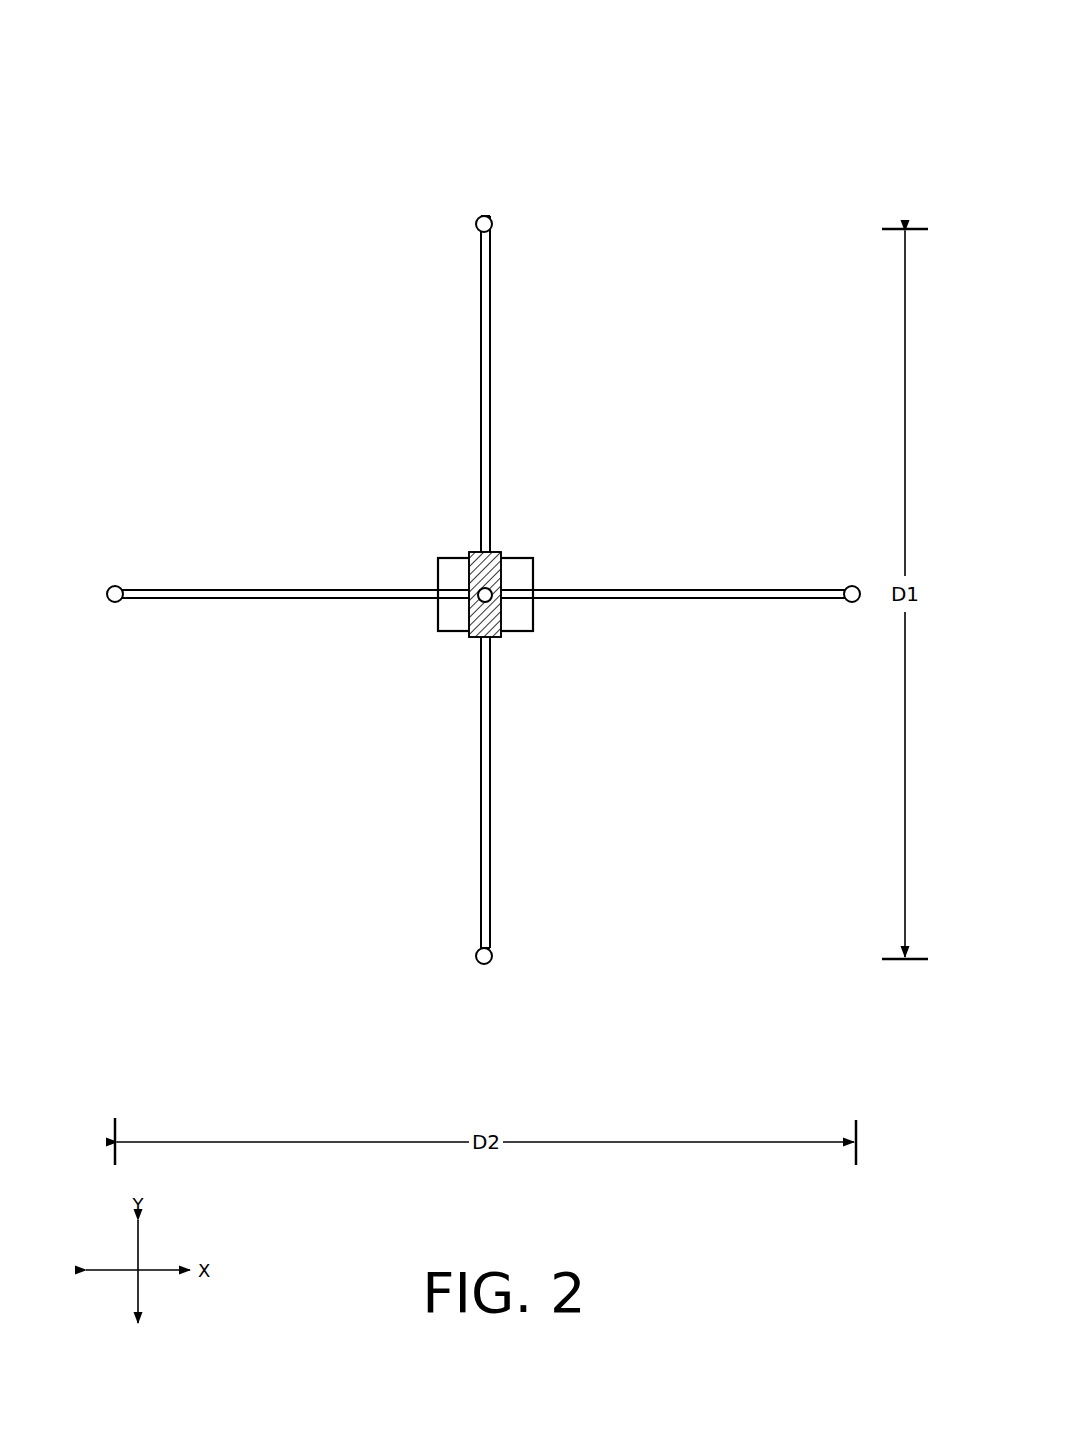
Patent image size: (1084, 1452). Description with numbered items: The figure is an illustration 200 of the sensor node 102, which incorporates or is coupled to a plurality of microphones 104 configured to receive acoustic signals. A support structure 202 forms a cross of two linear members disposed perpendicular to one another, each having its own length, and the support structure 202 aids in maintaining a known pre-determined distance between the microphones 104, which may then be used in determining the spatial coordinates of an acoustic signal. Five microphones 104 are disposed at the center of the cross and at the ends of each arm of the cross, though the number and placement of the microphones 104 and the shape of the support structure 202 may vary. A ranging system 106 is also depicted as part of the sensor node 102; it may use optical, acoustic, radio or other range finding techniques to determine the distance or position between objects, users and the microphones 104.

The illustration 200 is at (814, 26).
The sensor node 102 is at (483, 538).
The microphones 104 is at (513, 620).
The ranging system 106 is at (476, 636).
The support structure 202 is at (487, 418).